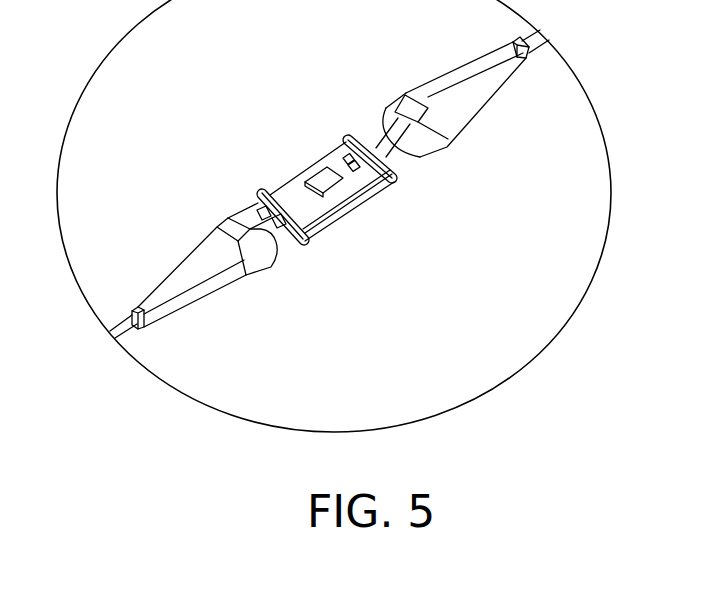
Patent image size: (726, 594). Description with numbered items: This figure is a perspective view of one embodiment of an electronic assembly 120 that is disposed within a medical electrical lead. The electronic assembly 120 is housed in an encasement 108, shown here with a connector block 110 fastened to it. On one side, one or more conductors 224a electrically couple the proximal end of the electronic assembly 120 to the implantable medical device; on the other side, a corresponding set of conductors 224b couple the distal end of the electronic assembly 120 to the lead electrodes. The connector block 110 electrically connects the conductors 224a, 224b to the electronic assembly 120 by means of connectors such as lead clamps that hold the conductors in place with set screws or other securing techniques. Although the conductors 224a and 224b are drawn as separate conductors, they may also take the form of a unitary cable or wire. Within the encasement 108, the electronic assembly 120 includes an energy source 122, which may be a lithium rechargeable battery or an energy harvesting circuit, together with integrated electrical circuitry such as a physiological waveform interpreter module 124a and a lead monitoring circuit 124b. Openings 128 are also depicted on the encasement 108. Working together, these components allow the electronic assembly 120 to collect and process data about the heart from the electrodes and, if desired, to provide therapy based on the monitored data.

The encasement 108 is at (391, 88).
The connector block 110 is at (362, 223).
The electronic assembly 120 is at (395, 306).
The energy source 122 is at (333, 188).
The physiological waveform interpreter (PWI) module 124a is at (313, 206).
The lead monitoring circuit 124b is at (350, 196).
The contact openings 128 is at (346, 157).
The conductors 224a is at (526, 42).
The conductors 224b is at (238, 220).